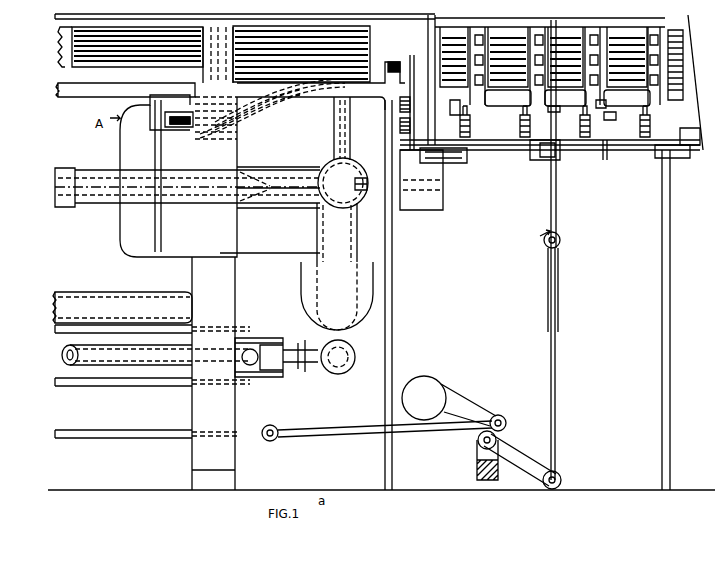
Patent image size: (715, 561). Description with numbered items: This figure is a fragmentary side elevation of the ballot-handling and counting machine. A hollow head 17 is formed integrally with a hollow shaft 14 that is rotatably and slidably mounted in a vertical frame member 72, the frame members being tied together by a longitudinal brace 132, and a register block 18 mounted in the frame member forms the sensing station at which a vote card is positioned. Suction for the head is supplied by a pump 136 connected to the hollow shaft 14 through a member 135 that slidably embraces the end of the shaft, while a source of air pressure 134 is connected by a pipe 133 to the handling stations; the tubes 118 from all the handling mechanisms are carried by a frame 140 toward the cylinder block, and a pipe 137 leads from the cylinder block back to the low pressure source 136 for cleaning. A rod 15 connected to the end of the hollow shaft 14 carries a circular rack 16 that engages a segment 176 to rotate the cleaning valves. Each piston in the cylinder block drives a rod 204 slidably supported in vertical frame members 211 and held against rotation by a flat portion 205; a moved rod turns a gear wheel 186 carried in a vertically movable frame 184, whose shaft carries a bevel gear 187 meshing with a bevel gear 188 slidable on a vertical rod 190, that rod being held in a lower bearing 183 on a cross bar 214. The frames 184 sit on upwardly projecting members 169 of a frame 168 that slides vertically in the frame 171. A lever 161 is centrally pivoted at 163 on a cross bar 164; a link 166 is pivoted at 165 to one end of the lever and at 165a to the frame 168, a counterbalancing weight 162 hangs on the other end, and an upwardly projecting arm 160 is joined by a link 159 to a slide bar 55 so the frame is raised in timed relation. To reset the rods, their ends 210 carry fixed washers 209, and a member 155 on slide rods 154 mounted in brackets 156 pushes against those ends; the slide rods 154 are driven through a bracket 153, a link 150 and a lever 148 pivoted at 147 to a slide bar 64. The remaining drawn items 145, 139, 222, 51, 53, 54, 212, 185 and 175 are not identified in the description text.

The frame 140 is at (167, 18).
The tubes 118 is at (140, 64).
The slide bar 64 is at (91, 97).
The cable block 145 is at (394, 62).
The bracket 139 is at (402, 66).
The pivot 147 is at (400, 106).
The lever 148 is at (400, 120).
The hollow head 17 is at (120, 146).
The register block 18 is at (166, 145).
The hollow shaft 14 is at (91, 166).
The inner shaft 51 is at (104, 201).
The rod 15 is at (326, 167).
The pipe 137 is at (333, 136).
The fastener 222 is at (389, 180).
The member 135 is at (359, 236).
The pump 136 is at (304, 279).
The longitudinal brace 132 is at (116, 293).
The bar 53 is at (115, 328).
The pipe 133 is at (128, 358).
The bar 54 is at (117, 380).
The slide bar 55 is at (117, 436).
The vertical frame member 72 is at (235, 407).
The source of air pressure 134 is at (349, 371).
The frame 171 is at (392, 264).
The frame upright 212 is at (449, 14).
The vertical rod 190 is at (470, 27).
The vertical frame member 211 is at (484, 19).
The fixed washer 209 is at (678, 24).
The ends of slide rods 210 is at (682, 32).
The longitudinal flat portion 205 is at (488, 97).
The rod 204 is at (578, 90).
The gear wheel 186 is at (608, 96).
The bevel gear 188 is at (586, 109).
The clip 185 is at (594, 104).
The bevel gear 187 is at (614, 109).
The cross bar 214 is at (454, 101).
The lower bearing 183 is at (470, 130).
The bracket 153 is at (462, 155).
The link 150 is at (464, 146).
The slide rod 154 is at (542, 168).
The bracket 156 is at (542, 158).
The member 155 is at (690, 140).
The frame member 184 is at (619, 152).
The segment 176 is at (426, 212).
The rod 175 is at (444, 182).
The circular rack 16 is at (448, 193).
The upwardly projecting member 169 is at (559, 206).
The pivot 165a is at (559, 239).
The frame 168 is at (533, 234).
The link 166 is at (556, 388).
The counterbalancing weight 162 is at (424, 386).
The link 159 is at (354, 424).
The upwardly projecting arm 160 is at (497, 417).
The pivot 163 is at (478, 447).
The cross bar 164 is at (475, 472).
The lever 161 is at (509, 452).
The pivot 165 is at (561, 479).